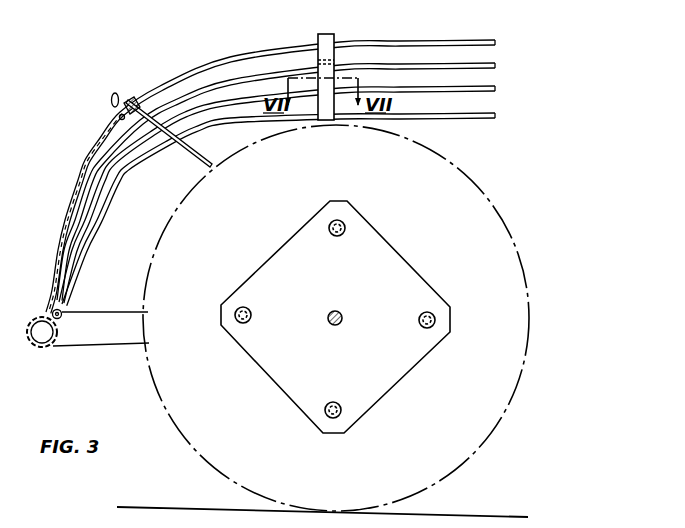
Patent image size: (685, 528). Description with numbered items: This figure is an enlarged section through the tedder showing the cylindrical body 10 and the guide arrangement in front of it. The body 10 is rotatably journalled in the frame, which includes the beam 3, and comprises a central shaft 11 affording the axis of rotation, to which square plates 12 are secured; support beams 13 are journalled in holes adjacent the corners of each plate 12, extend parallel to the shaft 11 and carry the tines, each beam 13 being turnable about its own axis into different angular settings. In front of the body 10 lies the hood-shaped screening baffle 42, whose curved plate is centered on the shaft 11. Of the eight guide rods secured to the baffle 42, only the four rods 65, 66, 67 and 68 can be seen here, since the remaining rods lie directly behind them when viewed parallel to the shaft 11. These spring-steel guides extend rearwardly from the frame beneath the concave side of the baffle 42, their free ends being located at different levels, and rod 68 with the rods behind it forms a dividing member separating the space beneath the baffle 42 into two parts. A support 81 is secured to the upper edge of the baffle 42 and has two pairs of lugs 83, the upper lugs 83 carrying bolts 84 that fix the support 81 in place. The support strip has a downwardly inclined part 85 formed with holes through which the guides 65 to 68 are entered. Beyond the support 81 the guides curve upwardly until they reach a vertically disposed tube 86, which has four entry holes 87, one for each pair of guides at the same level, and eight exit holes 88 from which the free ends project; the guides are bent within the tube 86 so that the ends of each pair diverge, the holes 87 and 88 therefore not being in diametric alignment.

The beam 3 is at (107, 340).
The cylindrical body 10 is at (474, 460).
The central shaft 11 is at (343, 321).
The square plate 12 is at (413, 286).
The support beam 13 is at (431, 328).
The hood-shaped screening baffle 42 is at (62, 229).
The guide rod 65 is at (496, 42).
The guide rod 66 is at (496, 65).
The guide rod 67 is at (496, 88).
The guide rod 68 is at (496, 115).
The support 81 is at (128, 98).
The lug 83 is at (124, 113).
The bolt 84 is at (111, 103).
The downwardly inclined part 85 is at (143, 107).
The vertically disposed tube 86 is at (330, 38).
The entry hole 87 is at (318, 62).
The exit hole 88 is at (335, 50).